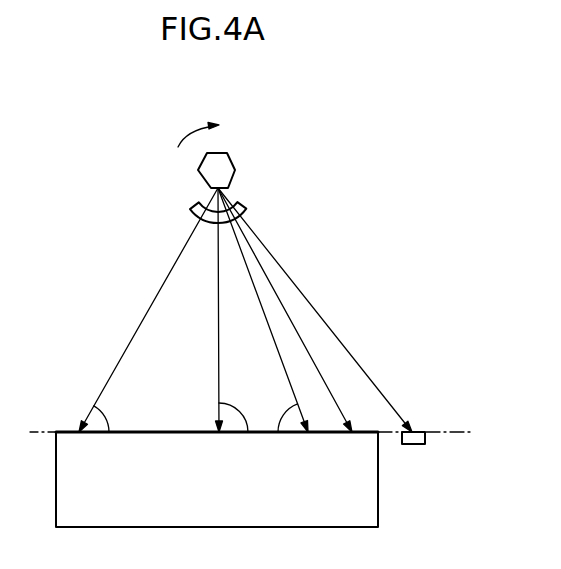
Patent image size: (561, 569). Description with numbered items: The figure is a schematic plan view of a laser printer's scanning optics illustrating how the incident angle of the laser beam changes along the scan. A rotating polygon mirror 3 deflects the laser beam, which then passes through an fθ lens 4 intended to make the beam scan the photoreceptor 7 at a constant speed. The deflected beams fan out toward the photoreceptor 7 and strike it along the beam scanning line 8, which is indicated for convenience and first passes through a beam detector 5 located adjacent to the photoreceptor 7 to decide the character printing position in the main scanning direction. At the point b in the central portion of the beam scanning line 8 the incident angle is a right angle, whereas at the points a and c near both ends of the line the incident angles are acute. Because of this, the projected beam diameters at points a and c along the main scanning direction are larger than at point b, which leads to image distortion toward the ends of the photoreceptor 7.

The polygon mirror 3 is at (220, 170).
The fθ lens 4 is at (246, 207).
The beam detector 5 is at (410, 446).
The photoreceptor 7 is at (378, 492).
The beam scanning line 8 is at (453, 427).
The point a is at (77, 428).
The point b is at (213, 427).
The point c is at (313, 427).